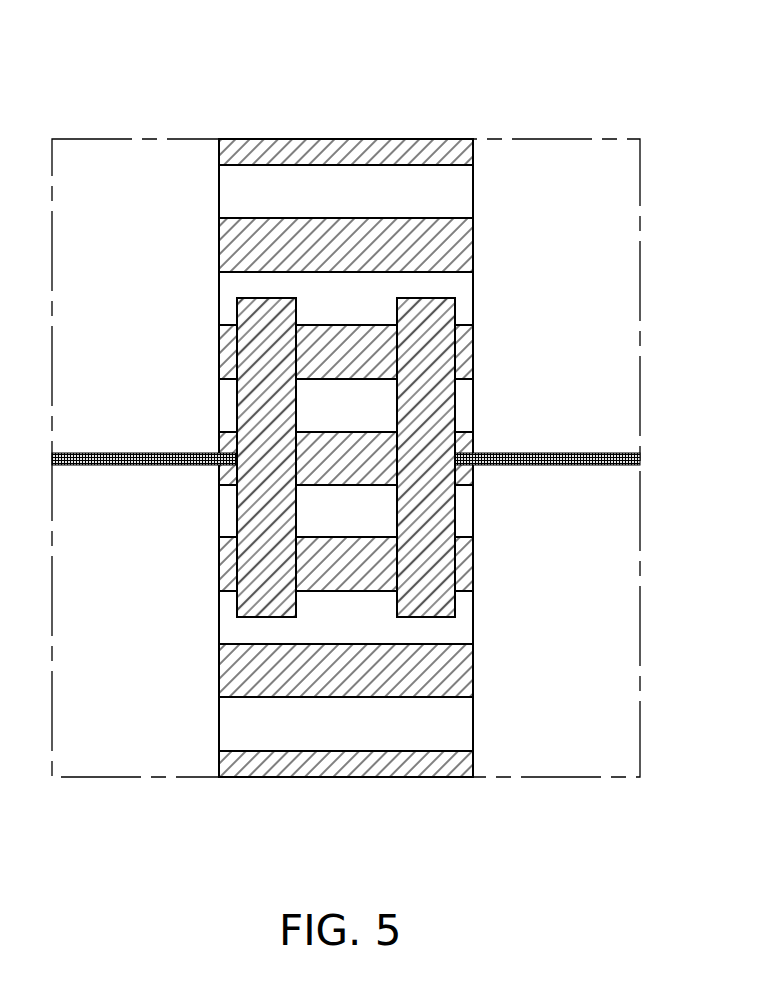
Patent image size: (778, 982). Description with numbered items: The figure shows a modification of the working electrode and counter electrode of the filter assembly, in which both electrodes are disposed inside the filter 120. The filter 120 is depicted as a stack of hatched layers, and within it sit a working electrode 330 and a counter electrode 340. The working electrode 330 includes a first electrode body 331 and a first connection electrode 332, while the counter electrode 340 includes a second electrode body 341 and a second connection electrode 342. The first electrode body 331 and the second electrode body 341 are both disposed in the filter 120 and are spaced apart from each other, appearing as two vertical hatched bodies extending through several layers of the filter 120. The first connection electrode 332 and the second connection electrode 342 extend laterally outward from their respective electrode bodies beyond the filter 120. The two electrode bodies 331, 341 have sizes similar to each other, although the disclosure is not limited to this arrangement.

The filter 120 is at (352, 768).
The working electrode 330 is at (174, 317).
The first electrode body 331 is at (268, 320).
The first connection electrode 332 is at (167, 458).
The counter electrode 340 is at (518, 317).
The second electrode body 341 is at (422, 318).
The second connection electrode 342 is at (523, 462).